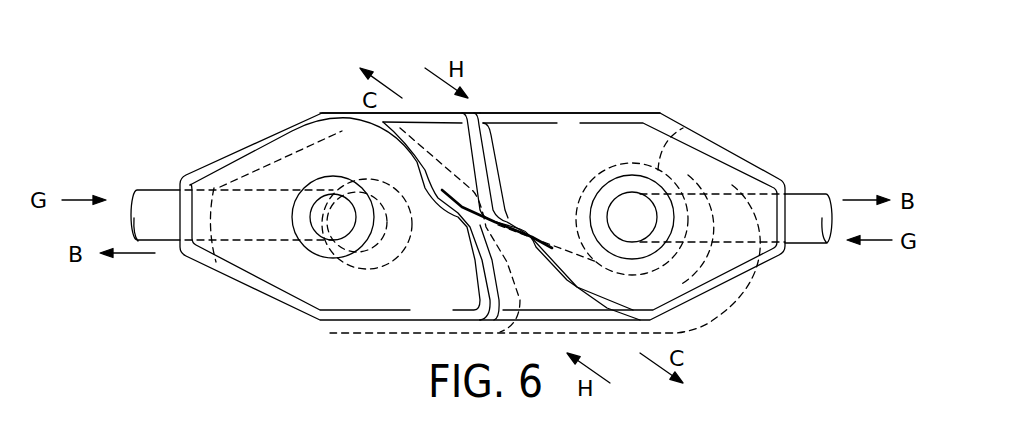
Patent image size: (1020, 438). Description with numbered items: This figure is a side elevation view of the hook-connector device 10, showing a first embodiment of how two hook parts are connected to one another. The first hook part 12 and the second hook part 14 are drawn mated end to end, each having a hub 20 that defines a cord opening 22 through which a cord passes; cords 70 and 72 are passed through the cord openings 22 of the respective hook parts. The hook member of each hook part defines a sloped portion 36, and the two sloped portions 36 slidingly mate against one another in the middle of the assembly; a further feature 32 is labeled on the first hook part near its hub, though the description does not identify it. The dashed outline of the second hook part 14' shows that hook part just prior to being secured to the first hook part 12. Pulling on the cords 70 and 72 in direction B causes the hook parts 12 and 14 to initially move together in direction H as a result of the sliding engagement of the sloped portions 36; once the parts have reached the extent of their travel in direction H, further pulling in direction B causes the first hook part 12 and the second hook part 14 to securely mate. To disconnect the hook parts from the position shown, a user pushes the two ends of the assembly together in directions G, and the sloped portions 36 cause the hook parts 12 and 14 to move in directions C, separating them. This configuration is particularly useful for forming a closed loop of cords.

The hook-connector device 10 is at (545, 54).
The first hook part 12 is at (560, 113).
The second hook part 14 is at (305, 216).
The second hook part (dashed position) 14' is at (344, 202).
The hub 20 is at (631, 175).
The cord opening 22 is at (326, 200).
The hidden cable channel 32 is at (700, 160).
The sloped portion 36 is at (500, 220).
The cord 70 is at (758, 163).
The cord 72 is at (243, 243).